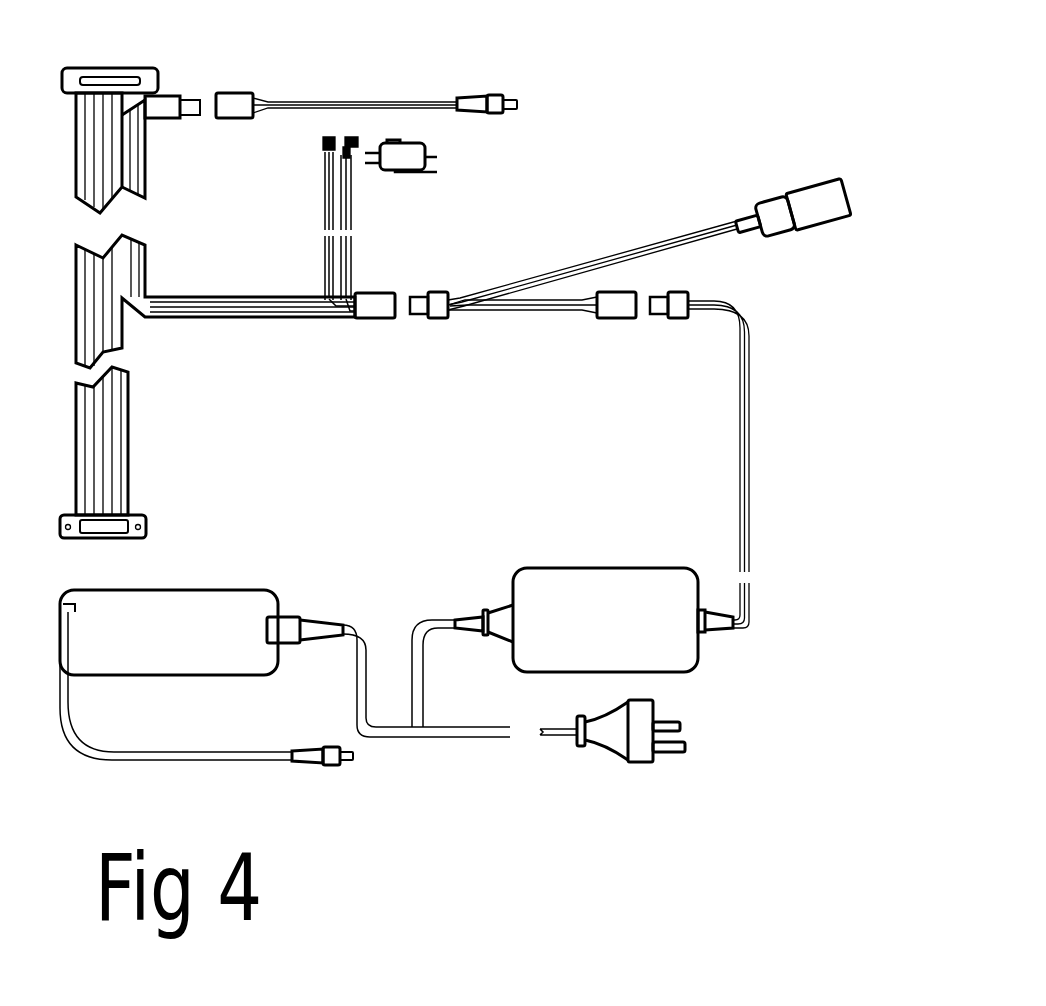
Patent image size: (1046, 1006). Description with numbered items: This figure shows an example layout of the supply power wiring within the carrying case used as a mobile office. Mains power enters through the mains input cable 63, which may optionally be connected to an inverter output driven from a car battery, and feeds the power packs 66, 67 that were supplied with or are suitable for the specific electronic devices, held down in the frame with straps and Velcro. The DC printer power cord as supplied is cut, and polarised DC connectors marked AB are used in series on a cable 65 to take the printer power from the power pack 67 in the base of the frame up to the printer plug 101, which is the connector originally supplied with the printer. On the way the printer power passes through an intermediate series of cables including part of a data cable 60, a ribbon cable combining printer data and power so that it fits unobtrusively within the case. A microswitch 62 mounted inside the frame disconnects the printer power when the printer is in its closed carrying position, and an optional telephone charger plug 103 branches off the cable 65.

The data cable 60 is at (127, 323).
The printer plug 101 is at (478, 83).
The microswitch 62 is at (437, 157).
The cable 65 is at (546, 312).
The plug connector 103 is at (778, 245).
The power pack 66 is at (165, 645).
The power pack 67 is at (652, 640).
The mains input cable 63 is at (542, 735).